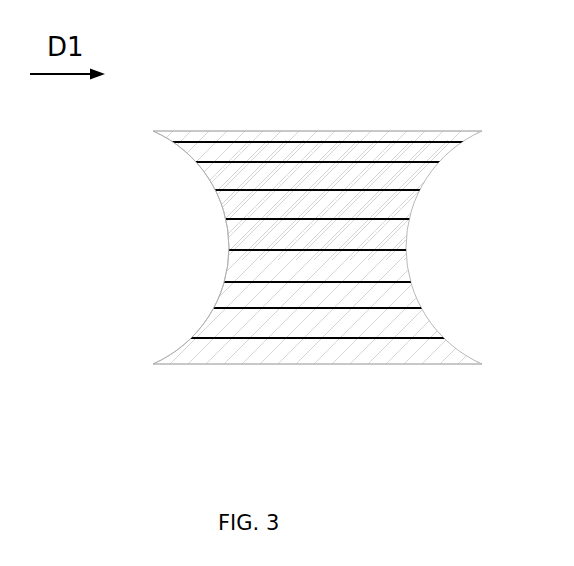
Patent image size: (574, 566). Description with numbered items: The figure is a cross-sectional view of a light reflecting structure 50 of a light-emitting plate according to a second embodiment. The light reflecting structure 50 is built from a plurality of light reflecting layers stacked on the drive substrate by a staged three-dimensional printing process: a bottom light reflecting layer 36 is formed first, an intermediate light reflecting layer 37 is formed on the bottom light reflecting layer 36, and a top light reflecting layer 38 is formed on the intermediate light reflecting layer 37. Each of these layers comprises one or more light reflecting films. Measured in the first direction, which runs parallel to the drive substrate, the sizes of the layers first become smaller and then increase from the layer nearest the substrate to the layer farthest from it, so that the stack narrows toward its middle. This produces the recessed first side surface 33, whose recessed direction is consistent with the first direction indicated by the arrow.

The light reflecting structure 50 is at (333, 42).
The top light reflecting layer 38 is at (175, 138).
The first side surface 33 is at (158, 146).
The intermediate light reflecting layer 37 is at (247, 230).
The bottom light reflecting layer 36 is at (187, 350).